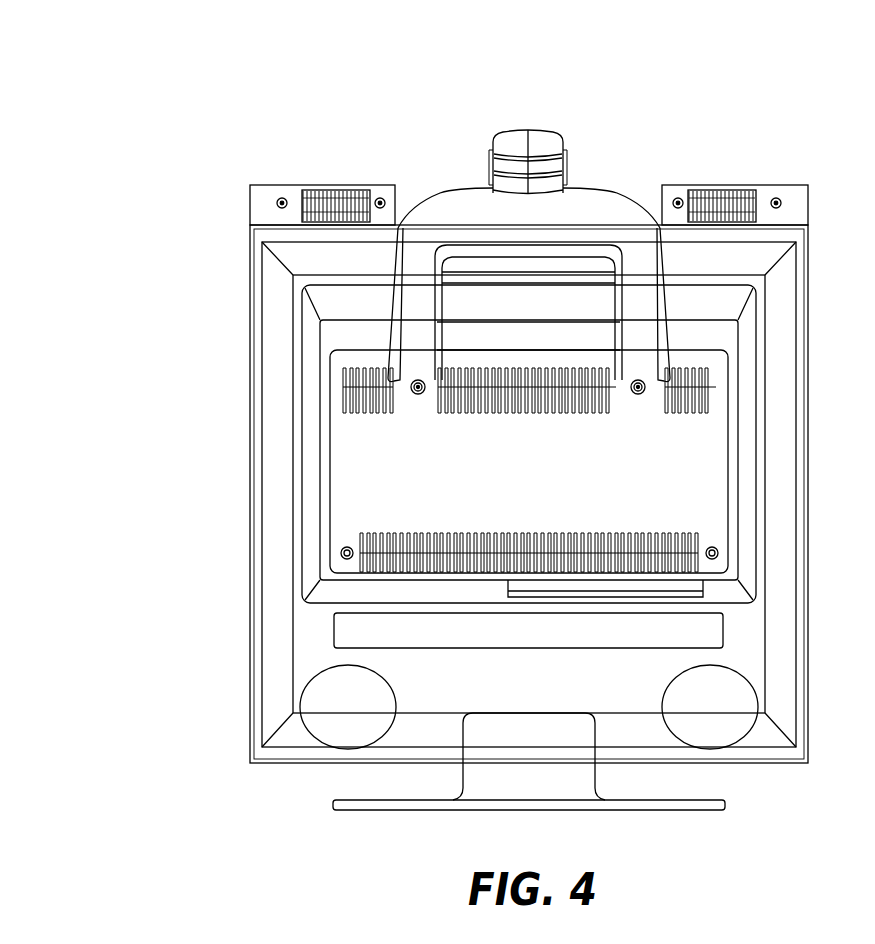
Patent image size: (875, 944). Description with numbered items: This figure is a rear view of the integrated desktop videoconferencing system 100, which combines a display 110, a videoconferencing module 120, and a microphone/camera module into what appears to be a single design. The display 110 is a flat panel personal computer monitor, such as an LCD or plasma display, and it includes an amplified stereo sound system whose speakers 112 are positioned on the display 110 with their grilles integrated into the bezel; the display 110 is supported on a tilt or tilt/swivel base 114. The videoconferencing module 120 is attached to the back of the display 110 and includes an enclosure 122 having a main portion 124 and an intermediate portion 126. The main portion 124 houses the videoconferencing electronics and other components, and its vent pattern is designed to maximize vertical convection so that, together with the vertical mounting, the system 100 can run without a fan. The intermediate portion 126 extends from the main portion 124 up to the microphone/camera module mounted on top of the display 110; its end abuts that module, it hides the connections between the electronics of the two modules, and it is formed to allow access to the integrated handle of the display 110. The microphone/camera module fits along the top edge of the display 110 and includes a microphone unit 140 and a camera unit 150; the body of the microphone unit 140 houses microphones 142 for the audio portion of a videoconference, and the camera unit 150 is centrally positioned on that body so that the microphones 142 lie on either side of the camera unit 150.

The integrated desktop videoconferencing system 100 is at (200, 110).
The display 110 is at (250, 363).
The speakers 112 is at (327, 749).
The tilt or tilt/swivel base 114 is at (372, 811).
The videoconferencing module 120 is at (322, 458).
The enclosure 122 is at (728, 482).
The main portion 124 is at (542, 491).
The intermediate portion 126 is at (575, 215).
The microphone unit 140 is at (280, 185).
The microphones 142 is at (340, 190).
The camera unit 150 is at (500, 130).